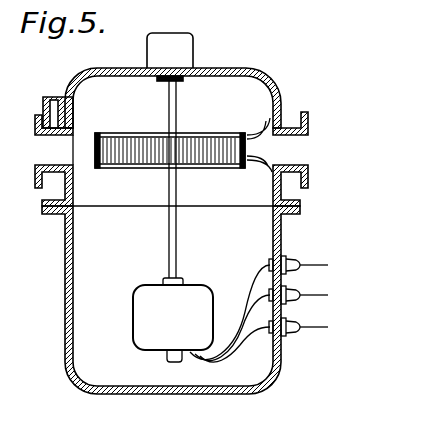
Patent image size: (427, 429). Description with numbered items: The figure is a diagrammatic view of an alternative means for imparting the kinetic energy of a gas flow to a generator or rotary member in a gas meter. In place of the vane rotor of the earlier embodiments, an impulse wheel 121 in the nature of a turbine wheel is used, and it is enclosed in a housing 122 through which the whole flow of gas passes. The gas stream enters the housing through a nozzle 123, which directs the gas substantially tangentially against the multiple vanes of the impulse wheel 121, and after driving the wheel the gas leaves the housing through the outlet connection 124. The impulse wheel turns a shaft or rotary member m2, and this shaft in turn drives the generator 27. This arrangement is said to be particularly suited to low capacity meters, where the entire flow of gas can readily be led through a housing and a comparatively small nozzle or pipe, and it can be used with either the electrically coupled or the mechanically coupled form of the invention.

The impulse wheel 121 is at (131, 168).
The housing 122 is at (72, 292).
The nozzle 123 is at (284, 128).
The outlet connection 124 is at (50, 130).
The generator 27 is at (144, 296).
The shaft or rotary member m2 is at (169, 234).